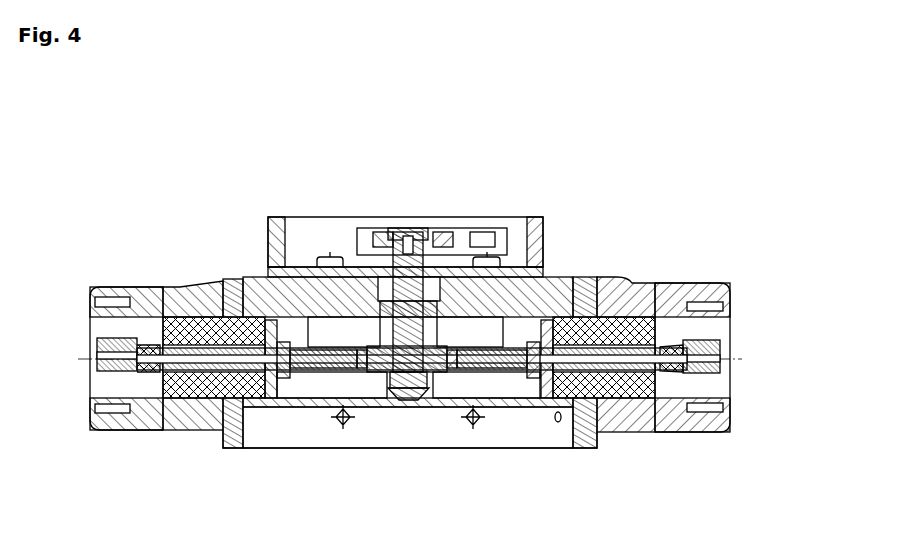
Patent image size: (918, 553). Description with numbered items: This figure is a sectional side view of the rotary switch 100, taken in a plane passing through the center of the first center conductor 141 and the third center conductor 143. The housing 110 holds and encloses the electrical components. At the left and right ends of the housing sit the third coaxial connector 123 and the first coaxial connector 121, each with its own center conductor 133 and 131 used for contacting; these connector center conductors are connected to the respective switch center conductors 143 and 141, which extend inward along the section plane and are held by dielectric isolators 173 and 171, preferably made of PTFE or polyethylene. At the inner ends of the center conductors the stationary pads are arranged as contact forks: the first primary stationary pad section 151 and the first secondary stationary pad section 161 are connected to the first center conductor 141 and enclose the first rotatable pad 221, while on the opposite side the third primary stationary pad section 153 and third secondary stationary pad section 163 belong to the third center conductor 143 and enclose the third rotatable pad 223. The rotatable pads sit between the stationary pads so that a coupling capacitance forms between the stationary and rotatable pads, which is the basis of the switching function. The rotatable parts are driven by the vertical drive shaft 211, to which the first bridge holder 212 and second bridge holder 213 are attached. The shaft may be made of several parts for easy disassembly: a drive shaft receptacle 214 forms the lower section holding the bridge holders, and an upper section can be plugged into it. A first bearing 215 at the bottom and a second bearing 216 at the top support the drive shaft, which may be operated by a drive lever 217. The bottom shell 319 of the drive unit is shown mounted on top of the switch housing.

The rotary switch 100 is at (577, 153).
The housing 110 is at (532, 232).
The first coaxial connector 121 is at (657, 297).
The third coaxial connector 123 is at (160, 293).
The center conductor of the first coaxial connector 131 is at (707, 383).
The center conductor of the third coaxial connector 133 is at (100, 384).
The first center conductor 141 is at (588, 425).
The third center conductor 143 is at (236, 428).
The first primary stationary pad section 151 is at (487, 256).
The third primary stationary pad section 153 is at (321, 256).
The first secondary stationary pad section 161 is at (480, 410).
The third secondary stationary pad section 163 is at (318, 405).
The isolator 171 is at (628, 388).
The isolator 173 is at (181, 392).
The drive shaft 211 is at (396, 240).
The first bridge holder 212 is at (457, 400).
The second bridge holder 213 is at (375, 400).
The drive shaft receptacle 214 is at (408, 403).
The first bearing 215 is at (426, 400).
The second bearing 216 is at (431, 228).
The drive lever 217 is at (471, 232).
The first rotatable pad 221 is at (512, 405).
The third rotatable pad 223 is at (341, 422).
The bottom shell 319 is at (274, 234).